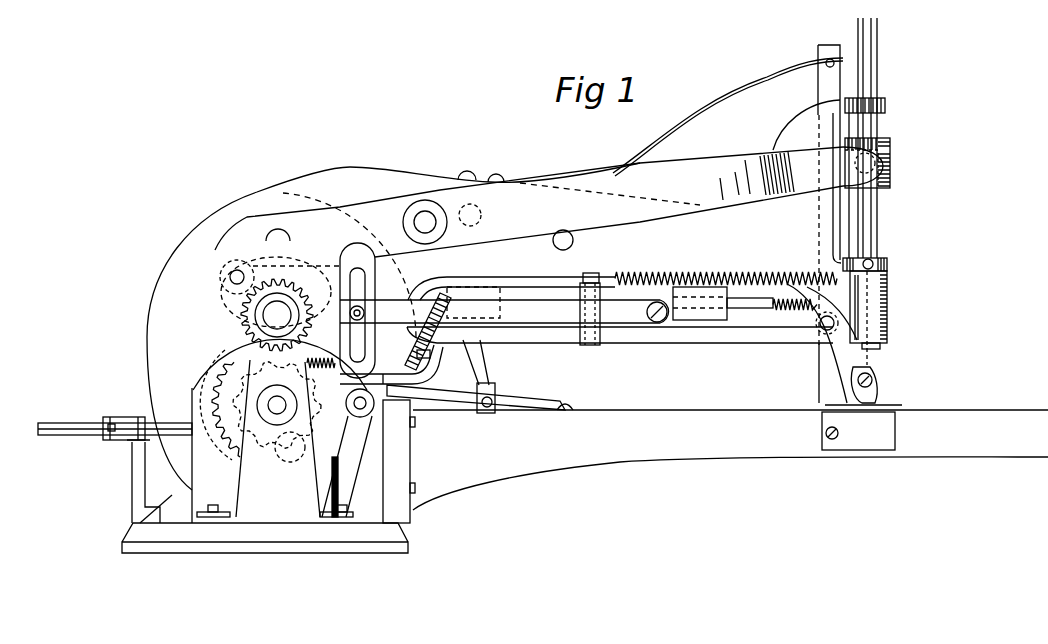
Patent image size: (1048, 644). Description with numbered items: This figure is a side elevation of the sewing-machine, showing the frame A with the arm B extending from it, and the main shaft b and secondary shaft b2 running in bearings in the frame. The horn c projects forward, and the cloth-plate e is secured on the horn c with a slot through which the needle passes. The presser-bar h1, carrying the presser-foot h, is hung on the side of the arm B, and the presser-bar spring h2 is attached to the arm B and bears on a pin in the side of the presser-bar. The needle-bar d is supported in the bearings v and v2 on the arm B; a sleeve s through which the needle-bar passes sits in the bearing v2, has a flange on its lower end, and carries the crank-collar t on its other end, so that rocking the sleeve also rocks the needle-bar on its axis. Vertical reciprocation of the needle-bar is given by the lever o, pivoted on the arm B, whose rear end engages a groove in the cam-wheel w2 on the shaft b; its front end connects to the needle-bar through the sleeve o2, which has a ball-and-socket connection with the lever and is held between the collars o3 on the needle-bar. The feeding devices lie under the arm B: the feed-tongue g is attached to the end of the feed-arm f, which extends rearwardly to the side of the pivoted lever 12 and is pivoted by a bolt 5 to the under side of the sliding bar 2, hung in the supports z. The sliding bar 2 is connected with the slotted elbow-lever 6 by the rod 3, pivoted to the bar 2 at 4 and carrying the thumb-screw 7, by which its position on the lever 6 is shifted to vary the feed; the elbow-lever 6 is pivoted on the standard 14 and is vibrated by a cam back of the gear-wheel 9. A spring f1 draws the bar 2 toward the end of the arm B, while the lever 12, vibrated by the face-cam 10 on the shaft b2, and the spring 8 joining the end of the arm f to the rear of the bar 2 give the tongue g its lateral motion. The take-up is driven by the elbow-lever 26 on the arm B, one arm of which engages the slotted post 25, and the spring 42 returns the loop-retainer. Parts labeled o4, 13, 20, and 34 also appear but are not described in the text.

The frame A is at (381, 358).
The arm B is at (549, 202).
The main shaft b is at (277, 315).
The secondary shaft b2 is at (275, 410).
The horn c is at (730, 460).
The needle-bar d is at (880, 213).
The cloth-plate e is at (858, 430).
The feed-arm f is at (727, 343).
The spring f1 is at (714, 272).
The feed-tongue g is at (877, 394).
The presser-foot h is at (819, 362).
The presser-bar h1 is at (818, 77).
The presser-bar spring h2 is at (728, 117).
The lever o is at (564, 229).
The sleeve o2 is at (890, 165).
The collars o3 is at (890, 142).
The clamp lower portion o4 is at (890, 186).
The sleeve s is at (882, 346).
The crank-collar t is at (890, 264).
The bearing v is at (885, 105).
The bearing v2 is at (890, 325).
The cam-wheel w2 is at (226, 287).
The supports z is at (587, 303).
The sliding bar 2 is at (438, 298).
The rod 3 is at (504, 311).
The pivot 4 is at (656, 323).
The spring 42 is at (795, 313).
The bolt 5 is at (592, 283).
The slotted elbow-lever 6 is at (357, 310).
The thumb-screw 7 is at (357, 315).
The spring 8 is at (430, 354).
The gear-wheel 9 is at (218, 396).
The face-cam 10 is at (226, 409).
The pivoted lever 12 is at (322, 431).
The cam 13 is at (277, 292).
The standard 14 is at (348, 453).
The treadle rod 20 is at (115, 470).
The slotted post 25 is at (486, 413).
The elbow-lever 26 is at (482, 362).
The feed lever 34 is at (522, 398).